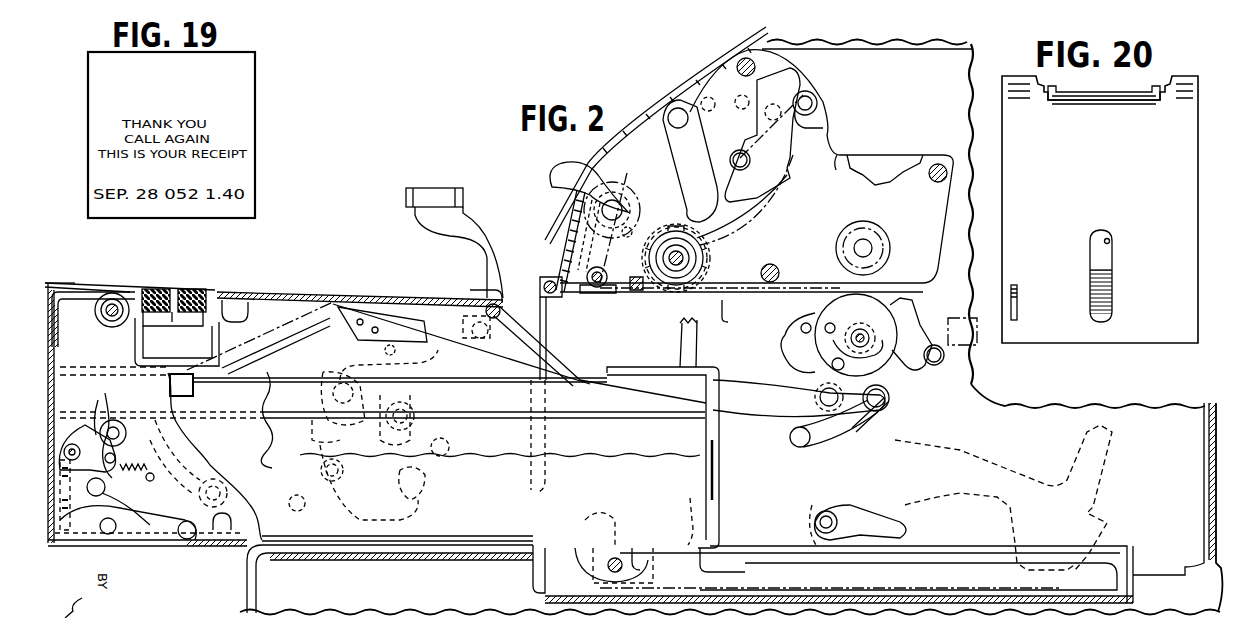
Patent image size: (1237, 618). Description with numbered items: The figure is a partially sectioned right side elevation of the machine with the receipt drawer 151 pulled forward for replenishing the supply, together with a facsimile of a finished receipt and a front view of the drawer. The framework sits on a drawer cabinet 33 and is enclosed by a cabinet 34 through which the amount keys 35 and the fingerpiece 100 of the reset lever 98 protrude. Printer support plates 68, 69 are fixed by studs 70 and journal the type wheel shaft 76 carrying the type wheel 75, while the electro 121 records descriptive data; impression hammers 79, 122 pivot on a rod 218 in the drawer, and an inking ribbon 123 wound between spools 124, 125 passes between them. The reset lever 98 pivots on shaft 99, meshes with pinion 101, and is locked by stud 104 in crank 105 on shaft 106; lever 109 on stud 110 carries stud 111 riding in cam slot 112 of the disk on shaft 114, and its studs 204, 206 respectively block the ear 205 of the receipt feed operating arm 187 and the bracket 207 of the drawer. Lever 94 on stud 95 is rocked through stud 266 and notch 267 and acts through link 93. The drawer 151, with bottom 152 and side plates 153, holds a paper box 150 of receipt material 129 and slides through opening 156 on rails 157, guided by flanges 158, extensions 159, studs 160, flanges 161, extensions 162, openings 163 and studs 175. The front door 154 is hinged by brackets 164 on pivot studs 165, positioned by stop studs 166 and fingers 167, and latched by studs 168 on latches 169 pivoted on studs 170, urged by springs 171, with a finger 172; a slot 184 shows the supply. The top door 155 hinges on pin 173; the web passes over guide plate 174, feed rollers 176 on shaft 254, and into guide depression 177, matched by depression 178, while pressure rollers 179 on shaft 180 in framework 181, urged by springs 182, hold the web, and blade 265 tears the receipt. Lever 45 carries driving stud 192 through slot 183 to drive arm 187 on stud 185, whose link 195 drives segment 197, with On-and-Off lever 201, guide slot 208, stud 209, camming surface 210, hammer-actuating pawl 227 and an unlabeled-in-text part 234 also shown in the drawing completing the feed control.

In FIG. 2, the drawer cabinet 33 is at (416, 600).
In FIG. 2, the cabinet 34 is at (742, 50).
In FIG. 2, the amount keys 35 is at (426, 188).
In FIG. 2, the lever 45 is at (985, 455).
In FIG. 2, the printer support plate 68 is at (882, 160).
In FIG. 2, the printer support plate 69 is at (836, 160).
In FIG. 2, the studs 70 is at (738, 72).
In FIG. 2, the type wheel 75 is at (691, 308).
In FIG. 2, the type wheel shaft 76 is at (690, 266).
In FIG. 2, the impression hammer 79 is at (192, 288).
In FIG. 2, the link 93 is at (690, 340).
In FIG. 2, the lever 94 is at (755, 385).
In FIG. 2, the stud 95 is at (825, 396).
In FIG. 2, the manipulative lever 98 is at (678, 147).
In FIG. 2, the shaft 99 is at (668, 112).
In FIG. 2, the fingerpiece 100 is at (572, 165).
In FIG. 2, the pinion 101 is at (700, 250).
In FIG. 2, the stud 104 is at (740, 152).
In FIG. 2, the crank 105 is at (818, 120).
In FIG. 2, the shaft 106 is at (813, 97).
In FIG. 2, the lever 109 is at (892, 395).
In FIG. 2, the stud 110 is at (808, 290).
In FIG. 2, the stud 111 is at (834, 367).
In FIG. 2, the cam slot 112 is at (893, 312).
In FIG. 2, the shaft 114 is at (862, 325).
In FIG. 2, the electro 121 is at (634, 285).
In FIG. 2, the electro impression hammer 122 is at (165, 288).
In FIG. 2, the inking ribbon 123 is at (720, 295).
In FIG. 2, the ribbon spool 124 is at (870, 248).
In FIG. 2, the ribbon spool 125 is at (614, 198).
In FIG. 20, the receipt material 129 is at (1098, 272).
In FIG. 2, the receipt material 129 is at (76, 283).
In FIG. 2, the paper box 150 is at (692, 476).
In FIG. 2, the drawer 151 is at (713, 498).
In FIG. 2, the bottom 152 is at (512, 540).
In FIG. 2, the side plates 153 is at (212, 458).
In FIG. 20, the front door 154 is at (1048, 335).
In FIG. 2, the front door 154 is at (50, 315).
In FIG. 2, the top door 155 is at (283, 296).
In FIG. 2, the opening 156 is at (530, 296).
In FIG. 2, the rails 157 is at (765, 552).
In FIG. 2, the flanges 158 is at (698, 548).
In FIG. 2, the downward extension 159 is at (640, 555).
In FIG. 2, the studs 160 is at (605, 545).
In FIG. 2, the flanges 161 is at (892, 563).
In FIG. 2, the downward extensions 162 is at (590, 572).
In FIG. 2, the openings 163 is at (650, 548).
In FIG. 2, the brackets 164 is at (90, 525).
In FIG. 2, the pivot studs 165 is at (115, 531).
In FIG. 2, the stop studs 166 is at (102, 488).
In FIG. 2, the fingers 167 is at (181, 535).
In FIG. 2, the studs 168 is at (90, 440).
In FIG. 2, the latches 169 is at (106, 402).
In FIG. 2, the studs 170 is at (108, 405).
In FIG. 2, the springs 171 is at (122, 440).
In FIG. 2, the finger 172 is at (73, 495).
In FIG. 2, the pin 173 is at (490, 282).
In FIG. 2, the guide plate 174 is at (300, 345).
In FIG. 2, the studs 175 is at (688, 525).
In FIG. 2, the feed rollers 176 is at (128, 288).
In FIG. 20, the guide depression 177 is at (1100, 98).
In FIG. 2, the guide depression 177 is at (78, 283).
In FIG. 2, the depression 178 is at (560, 228).
In FIG. 2, the pressure rollers 179 is at (596, 290).
In FIG. 2, the shaft 180 is at (601, 295).
In FIG. 2, the shiftable framework 181 is at (632, 230).
In FIG. 2, the compressible springs 182 is at (580, 240).
In FIG. 2, the clearance slot 183 is at (868, 524).
In FIG. 20, the slot 184 is at (1110, 241).
In FIG. 2, the stud 185 is at (316, 391).
In FIG. 2, the receipt feed operating arm 187 is at (312, 434).
In FIG. 2, the driving stud 192 is at (823, 522).
In FIG. 2, the link 195 is at (236, 472).
In FIG. 2, the segment 197 is at (190, 440).
In FIG. 20, the On-and-Off lever 201 is at (1014, 285).
In FIG. 2, the On-and-Off lever 201 is at (196, 534).
In FIG. 2, the stud 204 is at (795, 436).
In FIG. 2, the bent-over ear 205 is at (332, 462).
In FIG. 2, the stud 206 is at (922, 364).
In FIG. 2, the bracket 207 is at (486, 345).
In FIG. 2, the guide slot 208 is at (428, 472).
In FIG. 2, the stud 209 is at (440, 443).
In FIG. 2, the camming surface 210 is at (420, 519).
In FIG. 2, the rod 218 is at (333, 298).
In FIG. 2, the hammer-actuating pawl 227 is at (430, 362).
In FIG. 2, the arm 234 is at (398, 320).
In FIG. 2, the receipt feed shaft 254 is at (104, 322).
In FIG. 2, the tearing blade 265 is at (590, 288).
In FIG. 2, the stud 266 is at (890, 410).
In FIG. 2, the operating notch 267 is at (415, 400).